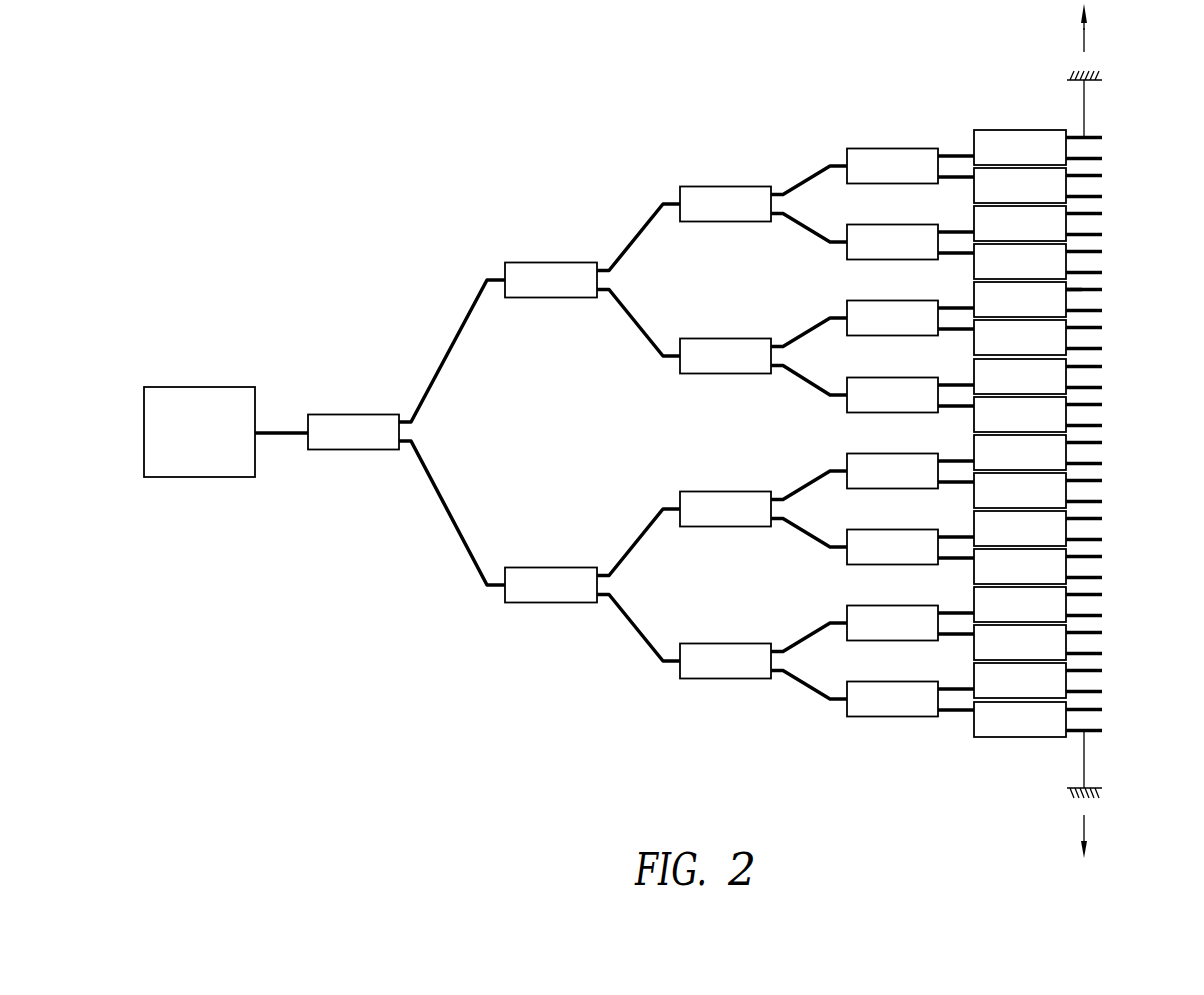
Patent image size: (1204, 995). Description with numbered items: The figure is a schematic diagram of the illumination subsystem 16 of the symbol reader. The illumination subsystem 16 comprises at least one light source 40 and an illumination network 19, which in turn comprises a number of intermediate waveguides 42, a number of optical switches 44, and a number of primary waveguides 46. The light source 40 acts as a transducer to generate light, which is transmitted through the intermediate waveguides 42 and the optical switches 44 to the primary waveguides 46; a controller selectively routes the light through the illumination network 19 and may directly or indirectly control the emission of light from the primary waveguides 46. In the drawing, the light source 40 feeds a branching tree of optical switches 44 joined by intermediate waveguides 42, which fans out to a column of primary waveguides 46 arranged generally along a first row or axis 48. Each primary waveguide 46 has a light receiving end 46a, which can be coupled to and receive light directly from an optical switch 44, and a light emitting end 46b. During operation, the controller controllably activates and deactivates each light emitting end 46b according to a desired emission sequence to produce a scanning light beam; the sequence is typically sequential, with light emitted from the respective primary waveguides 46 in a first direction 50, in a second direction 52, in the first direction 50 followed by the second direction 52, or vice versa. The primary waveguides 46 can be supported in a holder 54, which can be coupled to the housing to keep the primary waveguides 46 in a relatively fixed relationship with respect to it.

The illumination subsystem 16 is at (320, 135).
The illumination network 19 is at (708, 135).
The light source 40 is at (217, 386).
The intermediate waveguides 42 is at (285, 431).
The optical switches 44 is at (348, 450).
The primary waveguides 46 is at (1102, 137).
The light receiving end 46a is at (1068, 289).
The light emitting end 46b is at (1068, 290).
The first row or axis 48 is at (1087, 40).
The first direction 50 is at (1084, 13).
The second direction 52 is at (1086, 855).
The holder 54 is at (1084, 108).